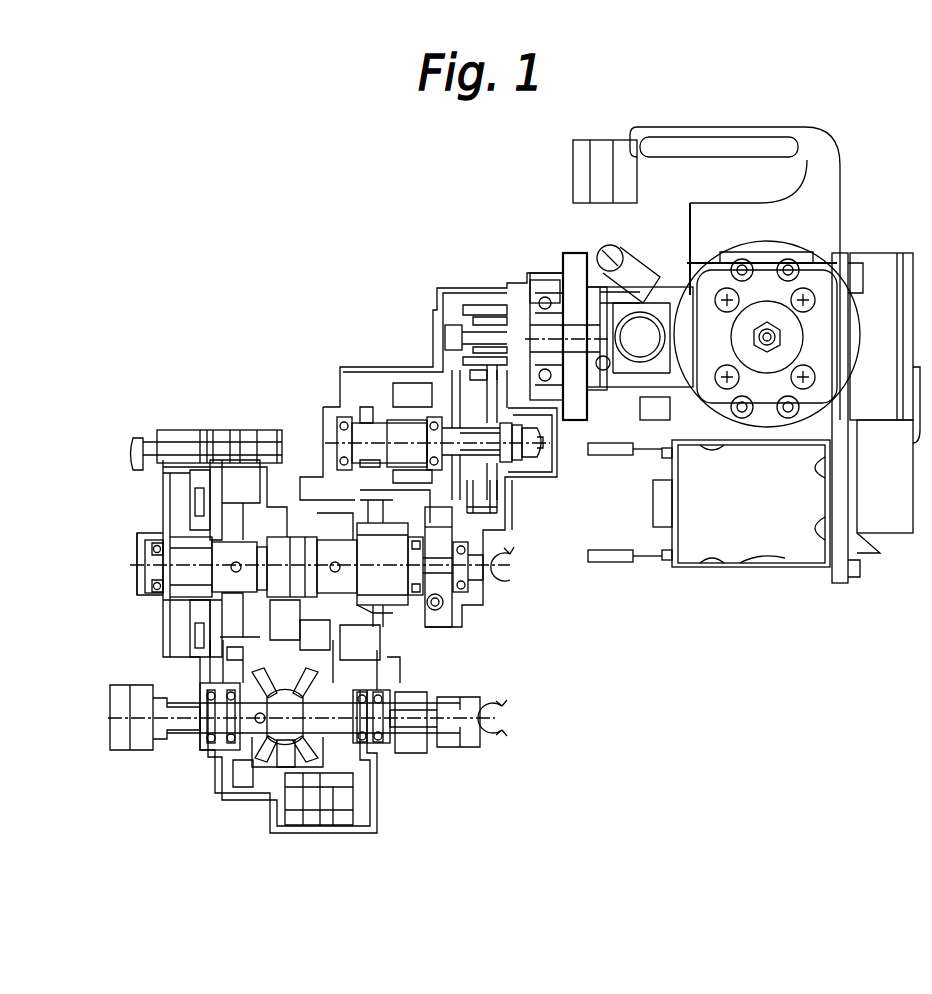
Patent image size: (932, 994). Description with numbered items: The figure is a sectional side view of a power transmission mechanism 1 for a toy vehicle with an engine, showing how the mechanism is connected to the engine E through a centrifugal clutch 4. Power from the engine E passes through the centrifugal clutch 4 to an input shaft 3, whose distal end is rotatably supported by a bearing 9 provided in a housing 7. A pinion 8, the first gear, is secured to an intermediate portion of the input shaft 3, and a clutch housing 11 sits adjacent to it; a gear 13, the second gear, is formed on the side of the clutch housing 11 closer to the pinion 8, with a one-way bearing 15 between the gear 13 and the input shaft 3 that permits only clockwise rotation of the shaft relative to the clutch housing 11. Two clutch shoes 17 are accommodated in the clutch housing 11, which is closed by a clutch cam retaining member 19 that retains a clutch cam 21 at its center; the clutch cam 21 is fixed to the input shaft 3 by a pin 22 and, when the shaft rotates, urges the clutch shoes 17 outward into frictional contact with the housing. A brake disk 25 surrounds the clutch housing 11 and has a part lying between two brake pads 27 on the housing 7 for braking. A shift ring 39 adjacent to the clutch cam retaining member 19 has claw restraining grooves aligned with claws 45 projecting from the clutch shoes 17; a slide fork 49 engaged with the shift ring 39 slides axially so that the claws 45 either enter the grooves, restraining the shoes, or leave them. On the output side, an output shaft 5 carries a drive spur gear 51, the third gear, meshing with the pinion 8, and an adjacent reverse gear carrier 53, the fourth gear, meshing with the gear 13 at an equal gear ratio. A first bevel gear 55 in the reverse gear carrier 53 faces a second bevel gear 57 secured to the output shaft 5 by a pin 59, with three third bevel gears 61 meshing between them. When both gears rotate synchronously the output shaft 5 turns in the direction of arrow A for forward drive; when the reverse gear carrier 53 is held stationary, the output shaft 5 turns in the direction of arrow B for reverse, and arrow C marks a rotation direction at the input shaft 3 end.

The power transmission mechanism 1 is at (255, 359).
The input shaft 3 is at (470, 576).
The centrifugal clutch 4 is at (545, 278).
The output shaft 5 is at (172, 723).
The housing 7 is at (137, 580).
The pinion 8 is at (412, 522).
The bearing 9 is at (145, 543).
The clutch housing 11 is at (282, 535).
The gear 13 is at (305, 535).
The one-way bearing 15 is at (305, 548).
The clutch shoes 17 is at (235, 540).
The clutch cam retaining member 19 is at (205, 475).
The clutch cam 21 is at (240, 535).
The pin 22 is at (231, 564).
The brake disk 25 is at (245, 465).
The brake pads 27 is at (240, 470).
The shift ring 39 is at (194, 528).
The claws 45 is at (190, 532).
The slide fork 49 is at (197, 478).
The drive spur gear 51 is at (330, 626).
The reverse gear carrier 53 is at (313, 627).
The first bevel gear 55 is at (335, 650).
The second bevel gear 57 is at (265, 673).
The pin 59 is at (257, 722).
The third bevel gears 61 is at (273, 753).
The arrow A is at (499, 724).
The arrow B is at (508, 704).
The rotation direction C is at (502, 564).
The engine E is at (820, 265).